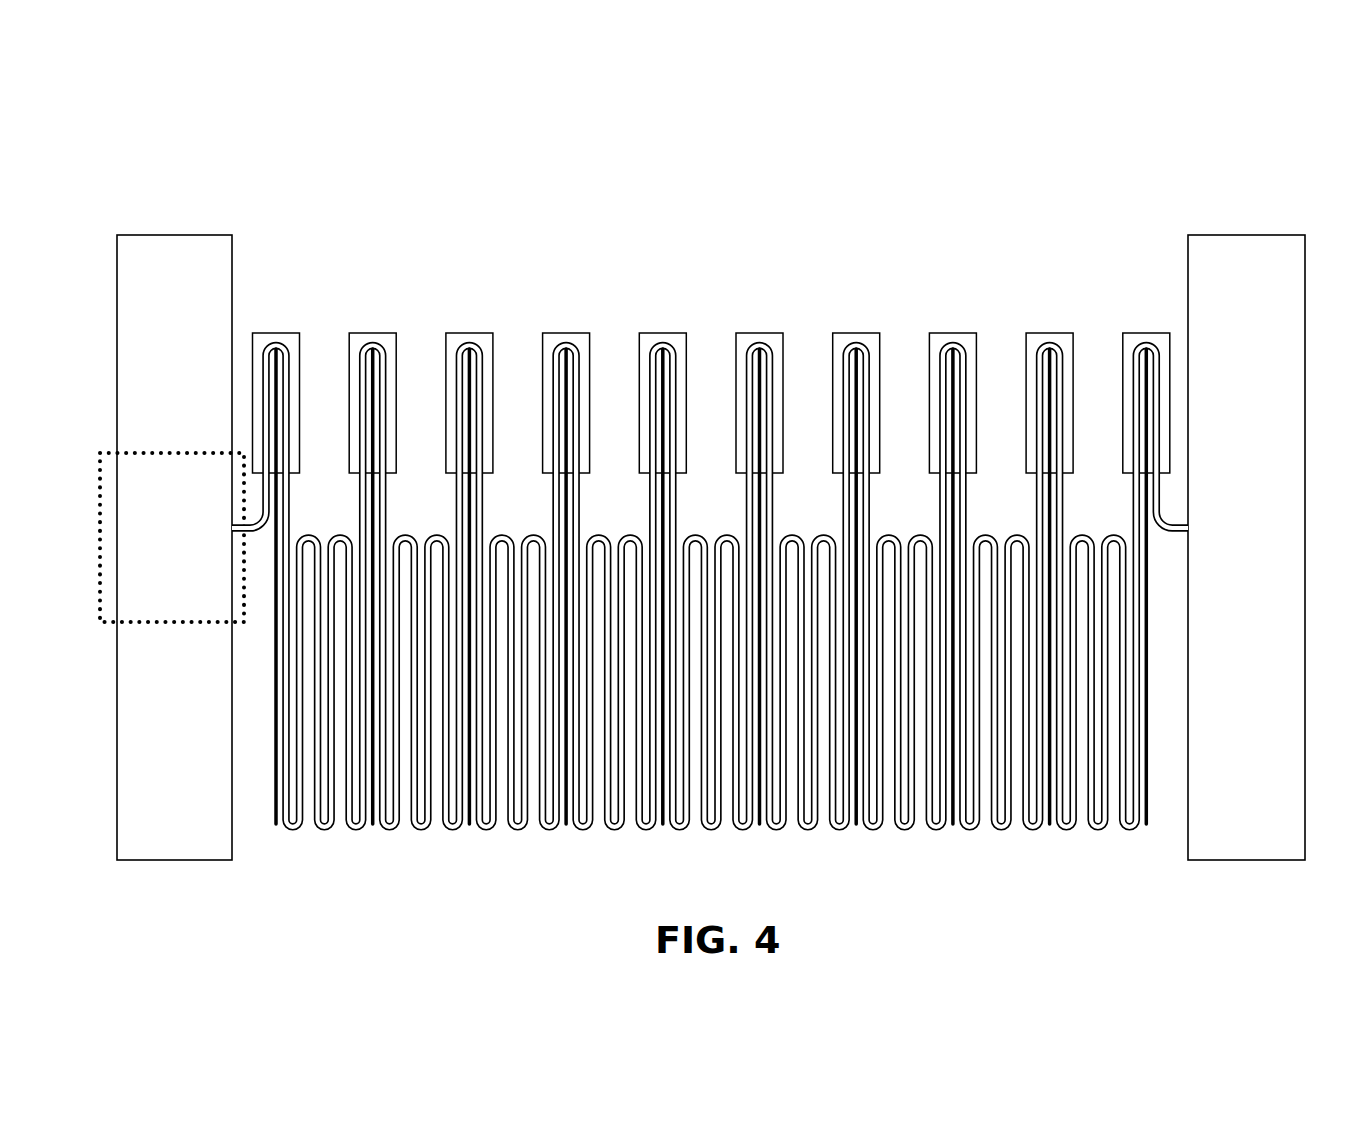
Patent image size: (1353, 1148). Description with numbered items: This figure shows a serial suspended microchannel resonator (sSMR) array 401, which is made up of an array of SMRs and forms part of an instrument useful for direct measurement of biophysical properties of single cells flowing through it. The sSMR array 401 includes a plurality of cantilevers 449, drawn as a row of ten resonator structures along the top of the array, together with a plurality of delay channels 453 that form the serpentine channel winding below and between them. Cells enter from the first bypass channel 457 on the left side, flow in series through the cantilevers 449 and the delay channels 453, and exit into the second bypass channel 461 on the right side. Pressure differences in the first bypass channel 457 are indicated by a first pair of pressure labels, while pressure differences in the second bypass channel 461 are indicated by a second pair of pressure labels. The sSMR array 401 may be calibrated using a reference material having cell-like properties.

The serial suspended microchannel resonator (sSMR) array 401 is at (712, 125).
The cantilevers 449 is at (1125, 333).
The delay channels 453 is at (346, 802).
The first bypass channel 457 is at (172, 547).
The second bypass channel 461 is at (1246, 547).